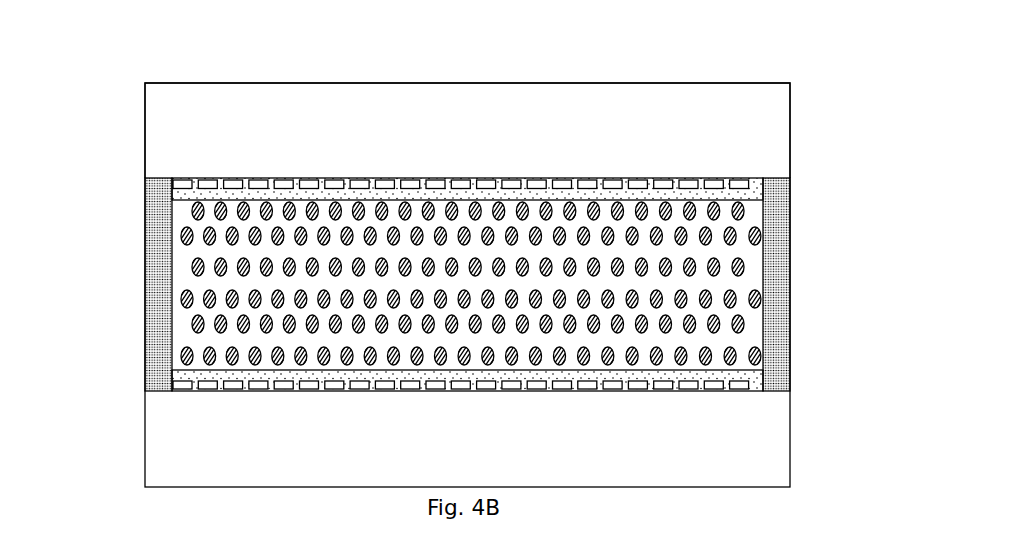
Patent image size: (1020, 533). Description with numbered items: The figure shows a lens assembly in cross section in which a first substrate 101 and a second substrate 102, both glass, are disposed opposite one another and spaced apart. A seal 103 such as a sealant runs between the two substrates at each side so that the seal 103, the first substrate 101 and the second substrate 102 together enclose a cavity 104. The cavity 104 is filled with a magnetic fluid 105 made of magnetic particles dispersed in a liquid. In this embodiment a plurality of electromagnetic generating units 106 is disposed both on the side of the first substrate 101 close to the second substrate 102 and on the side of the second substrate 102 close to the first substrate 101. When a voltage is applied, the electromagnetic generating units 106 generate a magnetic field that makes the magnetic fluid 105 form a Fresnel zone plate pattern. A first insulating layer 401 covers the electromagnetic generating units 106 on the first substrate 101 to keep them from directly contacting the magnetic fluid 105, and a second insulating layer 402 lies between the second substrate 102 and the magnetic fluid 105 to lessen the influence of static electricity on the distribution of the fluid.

The first substrate 101 is at (790, 455).
The second substrate 102 is at (790, 140).
The seal 103 is at (145, 295).
The cavity 104 is at (463, 208).
The magnetic fluid 105 is at (184, 226).
The electromagnetic generating unit 106 is at (745, 180).
The first insulating layer 401 is at (175, 370).
The second insulating layer 402 is at (299, 180).